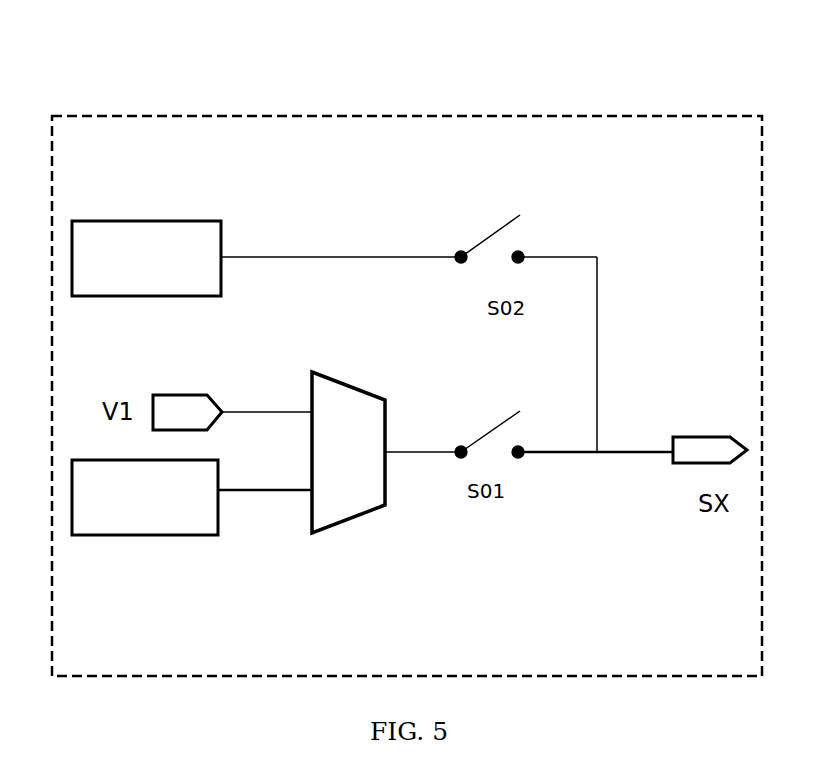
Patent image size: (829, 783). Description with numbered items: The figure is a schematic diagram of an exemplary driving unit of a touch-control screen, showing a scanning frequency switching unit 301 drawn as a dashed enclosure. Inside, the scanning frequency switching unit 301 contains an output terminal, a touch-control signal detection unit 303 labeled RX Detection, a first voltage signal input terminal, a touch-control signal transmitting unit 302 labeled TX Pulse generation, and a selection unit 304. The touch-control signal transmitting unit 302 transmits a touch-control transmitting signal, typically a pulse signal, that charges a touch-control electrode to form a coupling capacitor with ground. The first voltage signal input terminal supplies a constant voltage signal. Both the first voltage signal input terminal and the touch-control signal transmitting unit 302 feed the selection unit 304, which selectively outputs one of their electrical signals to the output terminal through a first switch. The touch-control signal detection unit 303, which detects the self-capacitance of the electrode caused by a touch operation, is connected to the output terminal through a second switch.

The scanning frequency switching unit 301 is at (407, 358).
The touch-control signal transmitting unit 302 is at (153, 536).
The touch-control signal detection unit 303 is at (146, 222).
The selection unit 304 is at (388, 484).